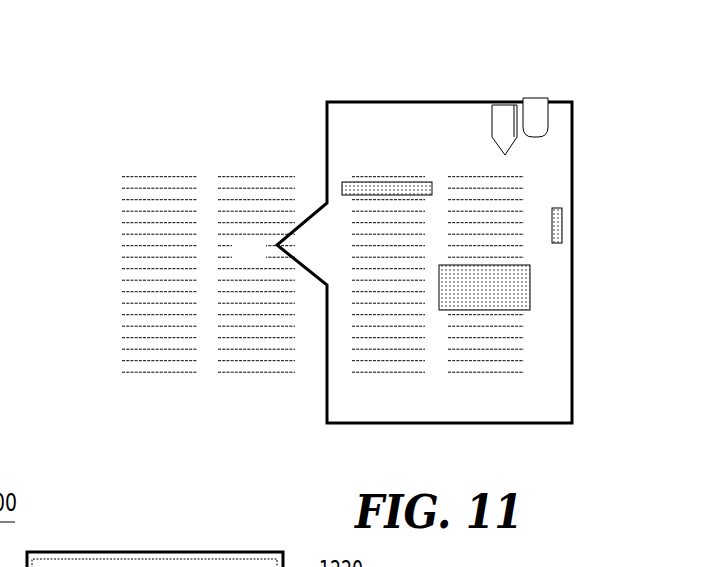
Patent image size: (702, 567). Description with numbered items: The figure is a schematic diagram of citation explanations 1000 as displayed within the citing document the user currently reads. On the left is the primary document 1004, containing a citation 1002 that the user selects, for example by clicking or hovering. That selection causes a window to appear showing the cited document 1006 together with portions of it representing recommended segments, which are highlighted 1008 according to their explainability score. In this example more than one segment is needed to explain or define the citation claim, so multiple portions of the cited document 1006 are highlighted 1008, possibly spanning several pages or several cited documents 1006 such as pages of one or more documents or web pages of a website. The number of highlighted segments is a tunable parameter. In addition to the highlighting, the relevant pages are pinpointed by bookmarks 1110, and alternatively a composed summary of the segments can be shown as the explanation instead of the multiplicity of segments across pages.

The citation explanations 1000 is at (245, 63).
The citation 1002 is at (228, 243).
The primary document 1004 is at (133, 278).
The cited document 1006 is at (557, 163).
The highlighted segments 1008 is at (383, 185).
The bookmarks 1110 is at (538, 98).